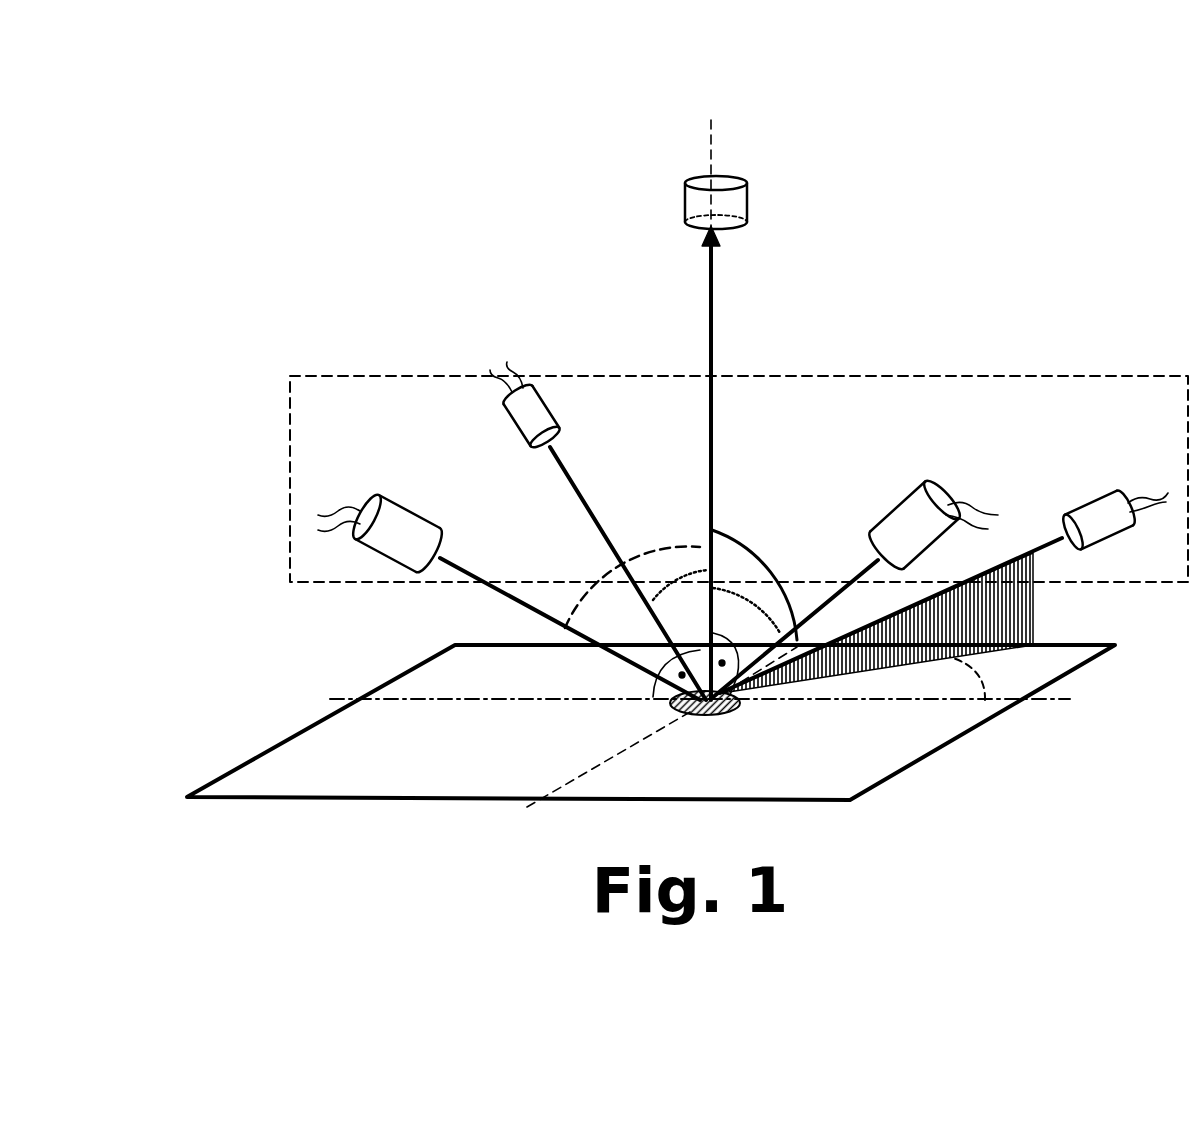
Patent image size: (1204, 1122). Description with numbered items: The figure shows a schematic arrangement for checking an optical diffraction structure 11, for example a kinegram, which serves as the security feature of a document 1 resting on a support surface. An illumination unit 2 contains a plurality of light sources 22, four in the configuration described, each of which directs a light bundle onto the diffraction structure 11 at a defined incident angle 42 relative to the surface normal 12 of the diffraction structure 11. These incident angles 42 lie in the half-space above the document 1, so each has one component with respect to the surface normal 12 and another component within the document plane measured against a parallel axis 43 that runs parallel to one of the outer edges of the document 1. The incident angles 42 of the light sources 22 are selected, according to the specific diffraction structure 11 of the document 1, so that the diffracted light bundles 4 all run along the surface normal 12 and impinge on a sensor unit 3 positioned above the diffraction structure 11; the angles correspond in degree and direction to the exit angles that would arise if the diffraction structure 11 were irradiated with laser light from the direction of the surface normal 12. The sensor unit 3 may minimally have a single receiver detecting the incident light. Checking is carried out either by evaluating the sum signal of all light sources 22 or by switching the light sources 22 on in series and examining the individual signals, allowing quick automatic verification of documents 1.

The document 1 is at (418, 672).
The optical diffraction structure 11 is at (680, 705).
The surface normal 12 is at (718, 158).
The illumination unit 2 is at (1122, 378).
The light sources 22 is at (412, 537).
The sensor unit 3 is at (693, 208).
The diffracted light bundles 4 is at (710, 335).
The incident angles 42 is at (670, 578).
The parallel axis 43 is at (1013, 707).